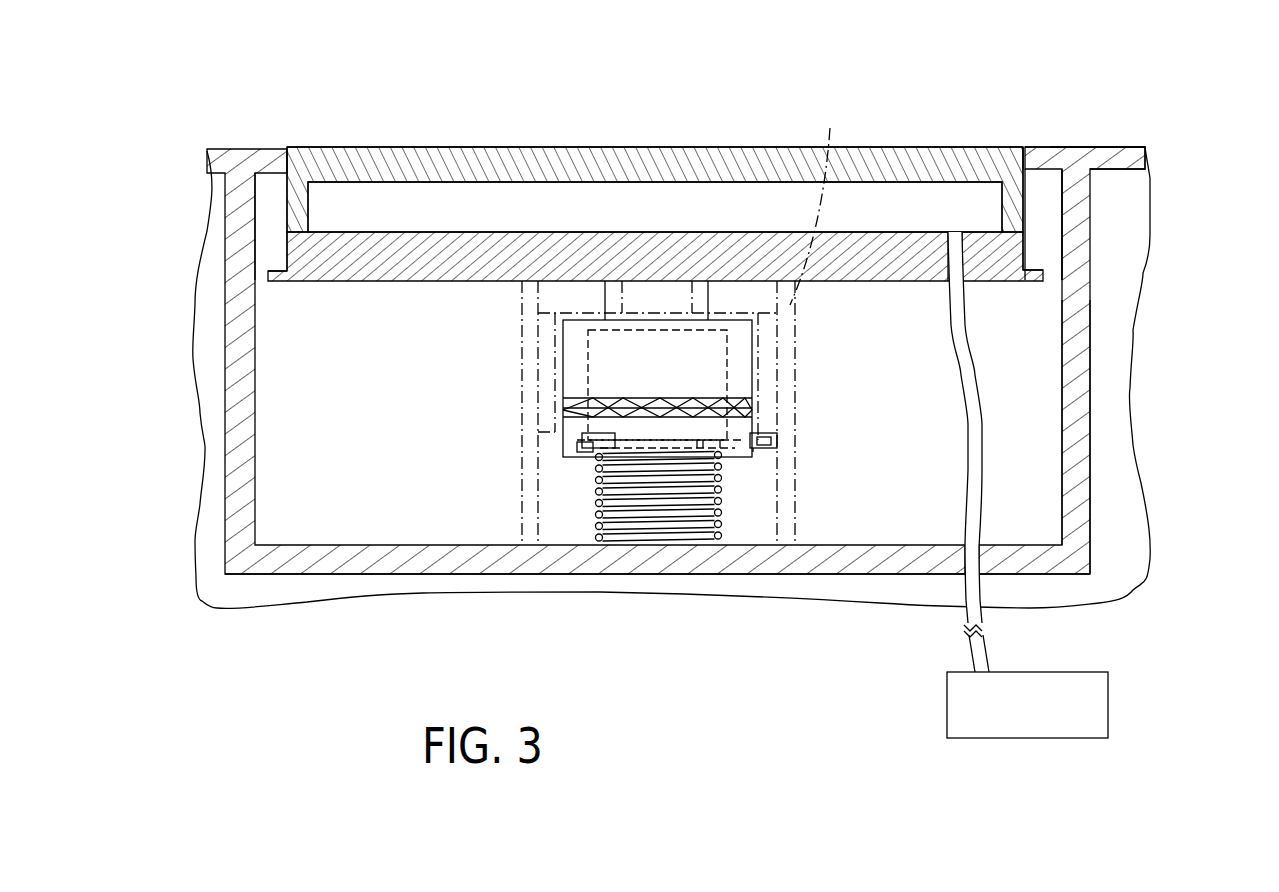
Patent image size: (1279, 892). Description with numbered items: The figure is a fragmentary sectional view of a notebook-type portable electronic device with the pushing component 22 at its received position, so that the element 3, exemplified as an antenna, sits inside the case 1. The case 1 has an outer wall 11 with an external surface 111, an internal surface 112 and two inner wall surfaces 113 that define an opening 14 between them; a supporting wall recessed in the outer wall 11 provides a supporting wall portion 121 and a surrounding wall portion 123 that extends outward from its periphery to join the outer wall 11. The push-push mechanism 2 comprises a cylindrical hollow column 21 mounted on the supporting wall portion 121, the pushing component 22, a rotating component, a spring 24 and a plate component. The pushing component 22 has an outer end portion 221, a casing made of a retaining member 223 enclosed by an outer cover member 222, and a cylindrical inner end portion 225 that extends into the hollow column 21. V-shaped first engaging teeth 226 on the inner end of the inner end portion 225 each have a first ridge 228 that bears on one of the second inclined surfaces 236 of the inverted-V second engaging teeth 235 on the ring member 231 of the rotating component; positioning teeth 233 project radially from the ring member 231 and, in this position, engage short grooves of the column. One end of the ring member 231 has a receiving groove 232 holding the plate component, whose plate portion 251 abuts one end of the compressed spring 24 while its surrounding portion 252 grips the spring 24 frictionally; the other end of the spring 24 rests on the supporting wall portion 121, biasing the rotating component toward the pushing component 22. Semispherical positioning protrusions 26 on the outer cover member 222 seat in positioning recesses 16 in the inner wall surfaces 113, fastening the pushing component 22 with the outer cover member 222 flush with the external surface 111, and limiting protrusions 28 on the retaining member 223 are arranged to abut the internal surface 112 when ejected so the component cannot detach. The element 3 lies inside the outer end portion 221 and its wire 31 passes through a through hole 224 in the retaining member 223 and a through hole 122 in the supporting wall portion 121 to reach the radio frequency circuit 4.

The case 1 is at (730, 350).
The outer wall 11 is at (1112, 156).
The external surface 111 is at (1092, 147).
The internal surface 112 is at (1040, 170).
The inner wall surfaces 113 is at (1025, 147).
The supporting wall portion 121 is at (1032, 572).
The through hole 122 is at (962, 572).
The surrounding wall portion 123 is at (1075, 380).
The opening 14 is at (890, 135).
The positioning recess 16 is at (280, 158).
The push-push mechanism 2 is at (512, 388).
The hollow column 21 is at (818, 201).
The pushing component 22 is at (675, 174).
The outer end portion 221 is at (655, 147).
The outer cover member 222 is at (455, 147).
The retaining member 223 is at (460, 52).
The through hole 224 is at (968, 267).
The inner end portion 225 is at (740, 345).
The first engaging teeth 226 is at (647, 395).
The first ridge 228 is at (598, 390).
The ring member 231 is at (740, 428).
The receiving groove 232 is at (733, 452).
The positioning teeth 233 is at (760, 452).
The second engaging teeth 235 is at (604, 425).
The second inclined surfaces 236 is at (600, 408).
The spring 24 is at (625, 527).
The plate portion 251 is at (703, 447).
The surrounding portion 252 is at (706, 445).
The positioning protrusion 26 is at (287, 156).
The limiting protrusions 28 is at (280, 270).
The element 3 is at (320, 208).
The wire 31 is at (973, 420).
The radio frequency circuit 4 is at (1108, 703).